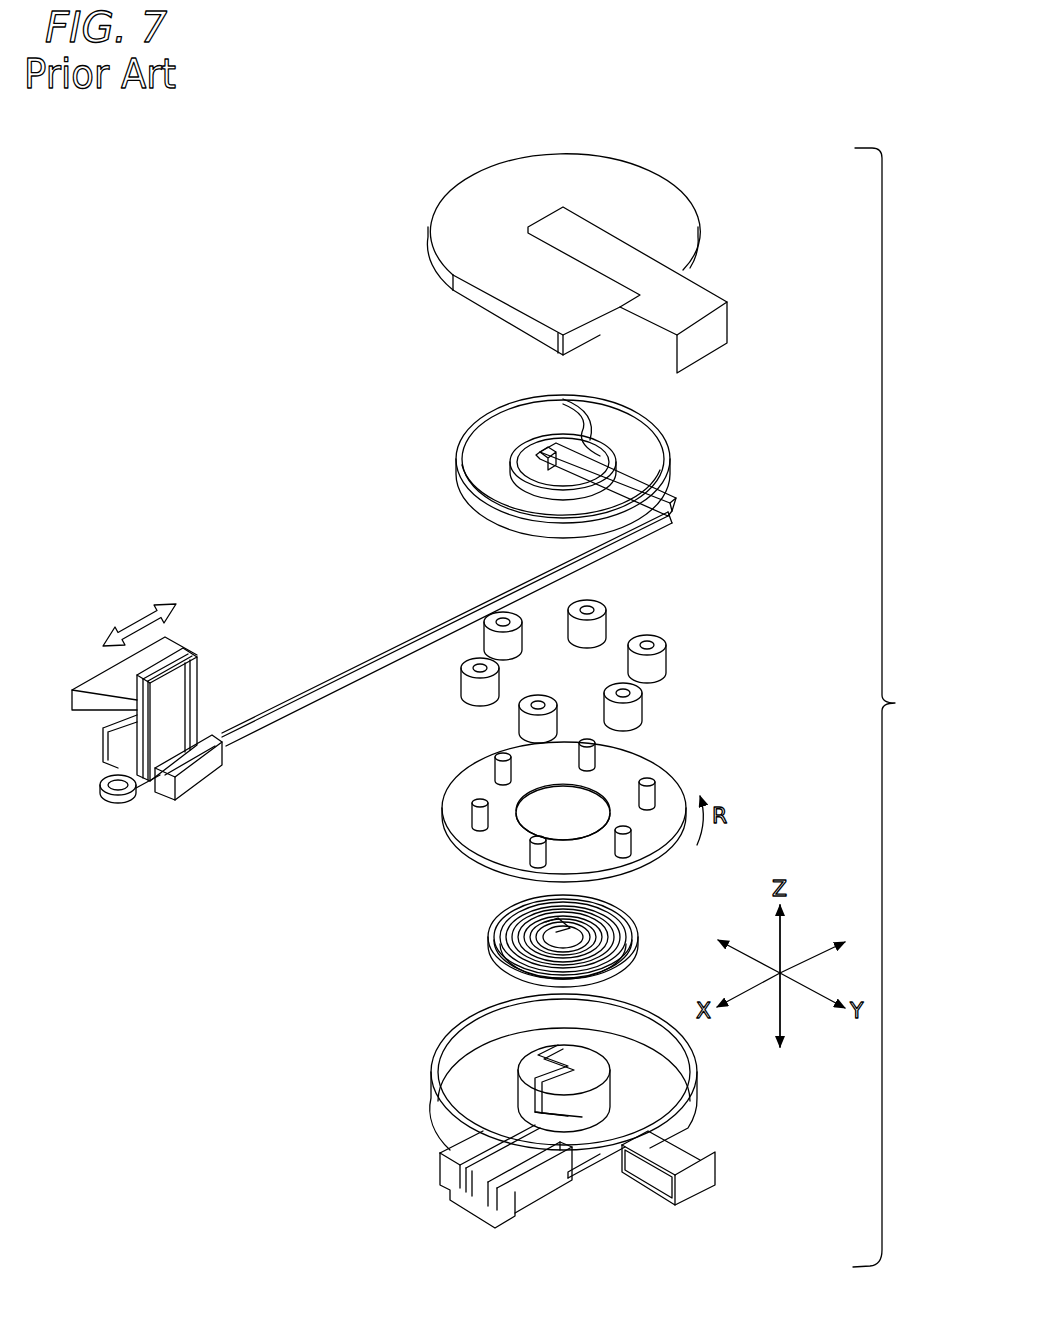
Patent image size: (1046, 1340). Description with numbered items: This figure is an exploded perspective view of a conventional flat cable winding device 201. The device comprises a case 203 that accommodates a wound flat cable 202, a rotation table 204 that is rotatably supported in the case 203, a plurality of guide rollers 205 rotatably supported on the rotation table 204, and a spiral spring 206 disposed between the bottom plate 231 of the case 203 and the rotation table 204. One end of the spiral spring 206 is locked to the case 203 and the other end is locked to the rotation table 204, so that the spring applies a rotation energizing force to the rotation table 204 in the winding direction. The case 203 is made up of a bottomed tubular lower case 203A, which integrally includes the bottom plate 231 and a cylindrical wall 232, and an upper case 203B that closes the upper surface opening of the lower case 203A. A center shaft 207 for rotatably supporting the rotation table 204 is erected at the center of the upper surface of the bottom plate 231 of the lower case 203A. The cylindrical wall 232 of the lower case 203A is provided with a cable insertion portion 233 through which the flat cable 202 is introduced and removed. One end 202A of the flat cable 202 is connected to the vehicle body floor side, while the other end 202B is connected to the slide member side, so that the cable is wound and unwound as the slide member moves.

The flat cable winding device 201 is at (386, 327).
The flat cable 202 is at (378, 638).
The one end of the flat cable 202A is at (674, 494).
The other end of the flat cable 202B is at (237, 748).
The case 203 is at (541, 1103).
The lower case 203A is at (428, 1102).
The upper case 203B is at (670, 162).
The rotation table 204 is at (658, 751).
The guide rollers 205 is at (605, 603).
The spiral spring 206 is at (640, 912).
The center shaft 207 is at (605, 1088).
The bottom plate 231 is at (478, 1056).
The cylindrical wall 232 is at (430, 1070).
The cable insertion portion 233 is at (473, 1200).